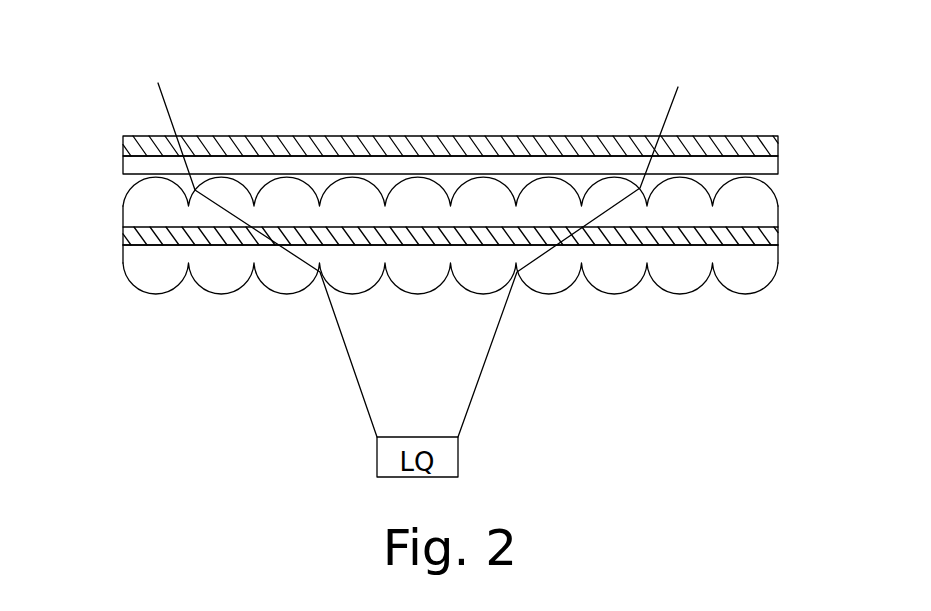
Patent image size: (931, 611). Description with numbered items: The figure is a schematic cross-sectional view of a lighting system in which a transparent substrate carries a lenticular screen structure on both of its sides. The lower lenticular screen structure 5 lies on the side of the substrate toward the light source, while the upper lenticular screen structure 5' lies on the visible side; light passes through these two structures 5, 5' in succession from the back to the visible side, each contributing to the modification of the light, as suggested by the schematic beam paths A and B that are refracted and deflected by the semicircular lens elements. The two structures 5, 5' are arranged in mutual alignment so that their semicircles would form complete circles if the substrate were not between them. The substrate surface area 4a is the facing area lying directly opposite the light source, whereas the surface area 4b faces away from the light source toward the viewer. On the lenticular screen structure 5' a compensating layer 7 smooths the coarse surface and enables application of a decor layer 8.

The decor layer 8 is at (757, 148).
The compensating layer 7 is at (765, 165).
The lenticular screen structure 5' is at (489, 206).
The substrate surface area 4b is at (142, 226).
The substrate surface area 4a is at (150, 247).
The lenticular screen structure 5 is at (486, 273).
The beam path A is at (264, 245).
The beam path B is at (573, 246).